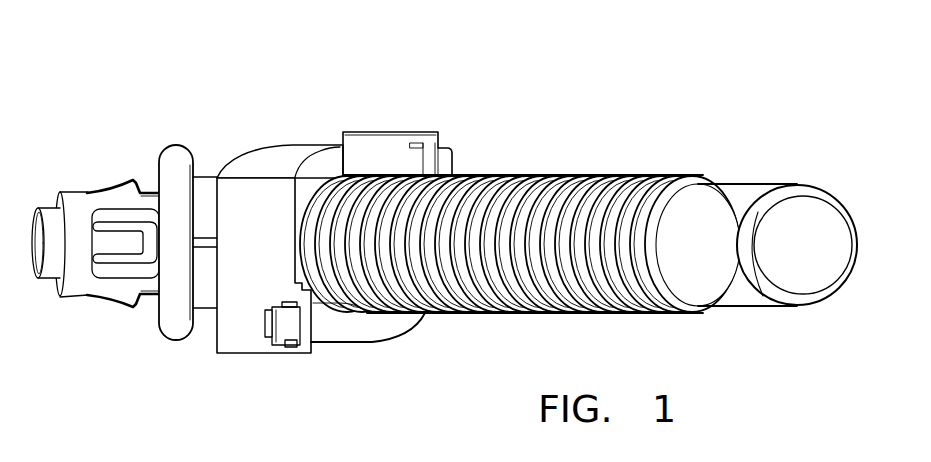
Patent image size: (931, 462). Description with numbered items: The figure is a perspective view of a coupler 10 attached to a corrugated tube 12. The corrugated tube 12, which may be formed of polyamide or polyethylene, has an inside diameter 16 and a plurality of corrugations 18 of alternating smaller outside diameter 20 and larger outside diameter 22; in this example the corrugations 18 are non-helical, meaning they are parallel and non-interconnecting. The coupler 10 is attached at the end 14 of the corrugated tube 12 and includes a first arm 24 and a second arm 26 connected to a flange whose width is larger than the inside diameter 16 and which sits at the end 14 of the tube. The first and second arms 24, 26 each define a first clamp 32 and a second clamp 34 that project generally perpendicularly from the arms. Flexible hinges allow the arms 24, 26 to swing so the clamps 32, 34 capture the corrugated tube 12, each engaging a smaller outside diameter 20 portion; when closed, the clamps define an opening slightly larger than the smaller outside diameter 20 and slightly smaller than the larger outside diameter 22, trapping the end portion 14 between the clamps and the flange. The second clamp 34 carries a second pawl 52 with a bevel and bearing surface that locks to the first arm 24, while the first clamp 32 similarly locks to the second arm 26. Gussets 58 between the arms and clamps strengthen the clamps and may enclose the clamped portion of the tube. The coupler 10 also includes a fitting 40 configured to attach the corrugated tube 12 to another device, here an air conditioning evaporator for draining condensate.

The coupler 10 is at (444, 236).
The corrugated tube 12 is at (728, 287).
The end of the corrugated tube 14 is at (197, 362).
The inside diameter 16 is at (805, 273).
The corrugations 18 is at (519, 232).
The smaller outside diameter 20 is at (397, 278).
The larger outside diameter 22 is at (412, 280).
The first arm 24 is at (250, 330).
The second arm 26 is at (417, 130).
The first clamp 32 is at (332, 165).
The second clamp 34 is at (330, 323).
The fitting 40 is at (113, 303).
The second pawl 52 is at (282, 327).
The gussets 58 is at (272, 157).